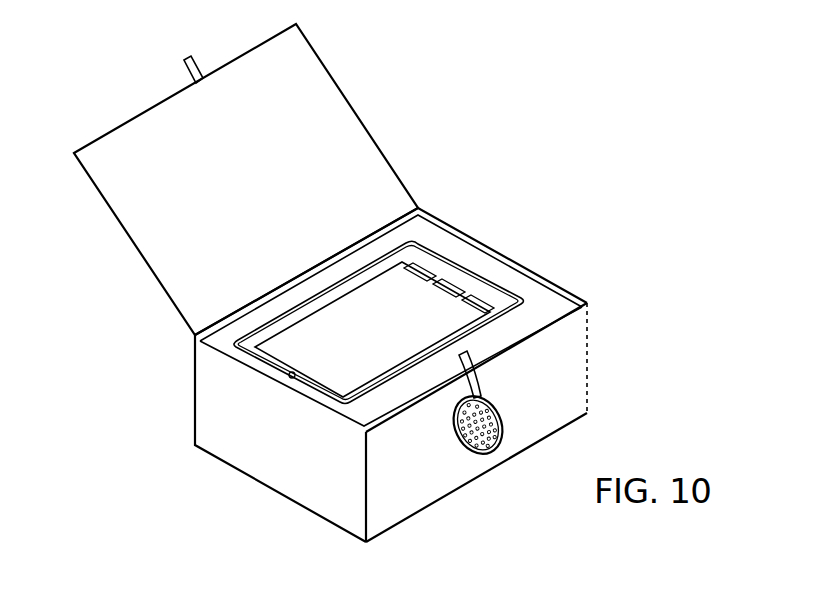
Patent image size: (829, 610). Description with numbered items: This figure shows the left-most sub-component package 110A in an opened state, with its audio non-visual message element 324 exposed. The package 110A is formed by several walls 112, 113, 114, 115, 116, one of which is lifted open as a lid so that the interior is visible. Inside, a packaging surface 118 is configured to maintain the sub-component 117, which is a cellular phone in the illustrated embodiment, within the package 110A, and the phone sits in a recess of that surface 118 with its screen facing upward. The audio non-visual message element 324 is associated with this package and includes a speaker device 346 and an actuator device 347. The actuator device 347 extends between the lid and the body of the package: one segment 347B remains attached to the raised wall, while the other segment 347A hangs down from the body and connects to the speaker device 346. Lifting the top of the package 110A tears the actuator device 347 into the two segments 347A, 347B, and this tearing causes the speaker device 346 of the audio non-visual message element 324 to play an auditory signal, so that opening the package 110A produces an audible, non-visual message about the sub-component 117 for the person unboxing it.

The left-most sub-component package 110A is at (360, 283).
The wall 112 is at (587, 322).
The wall 113 is at (195, 421).
The wall 114 is at (195, 378).
The wall 115 is at (430, 215).
The wall 116 is at (345, 107).
The sub-component 117 is at (335, 305).
The packaging surface 118 is at (543, 307).
The audio non-visual message element 324 is at (444, 411).
The speaker device 346 is at (502, 410).
The actuator device 347 is at (353, 253).
The actuator device segment 347A is at (462, 352).
The actuator device segment 347B is at (185, 57).